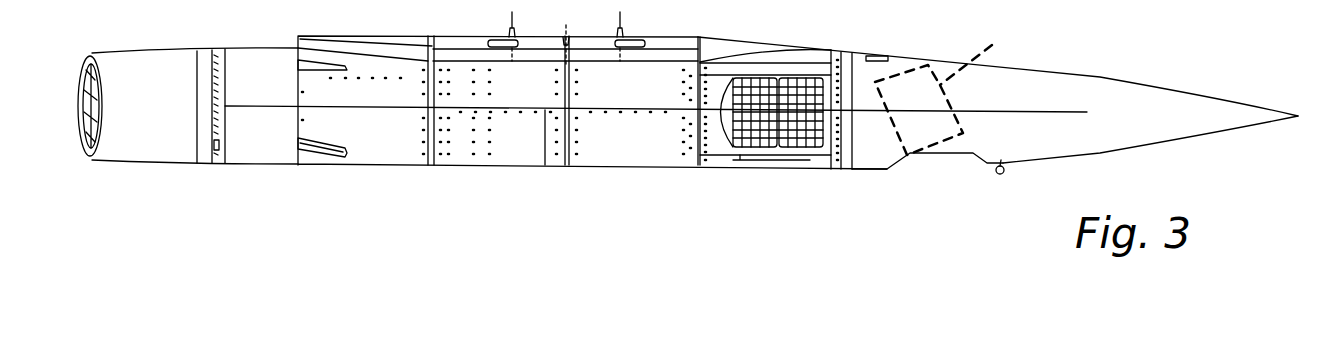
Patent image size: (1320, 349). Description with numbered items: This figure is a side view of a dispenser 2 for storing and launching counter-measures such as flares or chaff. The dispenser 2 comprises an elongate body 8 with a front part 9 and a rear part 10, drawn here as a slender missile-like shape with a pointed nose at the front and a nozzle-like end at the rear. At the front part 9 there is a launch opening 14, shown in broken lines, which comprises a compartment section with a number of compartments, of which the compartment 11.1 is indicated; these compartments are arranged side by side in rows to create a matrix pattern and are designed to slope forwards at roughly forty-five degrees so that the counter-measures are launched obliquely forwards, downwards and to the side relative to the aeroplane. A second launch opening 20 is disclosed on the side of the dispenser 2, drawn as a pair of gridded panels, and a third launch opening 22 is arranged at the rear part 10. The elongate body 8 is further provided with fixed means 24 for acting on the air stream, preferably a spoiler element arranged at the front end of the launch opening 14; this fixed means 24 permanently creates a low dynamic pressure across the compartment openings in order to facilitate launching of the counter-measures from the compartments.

The rear part 10 is at (129, 201).
The third launch opening 22 is at (80, 88).
The dispenser 2 is at (372, 166).
The elongate body 8 is at (581, 167).
The second launch opening 20 is at (768, 148).
The front part 9 is at (1124, 53).
The launch opening 14 is at (932, 160).
The compartment 11.1 is at (1005, 53).
The fixed means / spoiler element 24 is at (1000, 176).